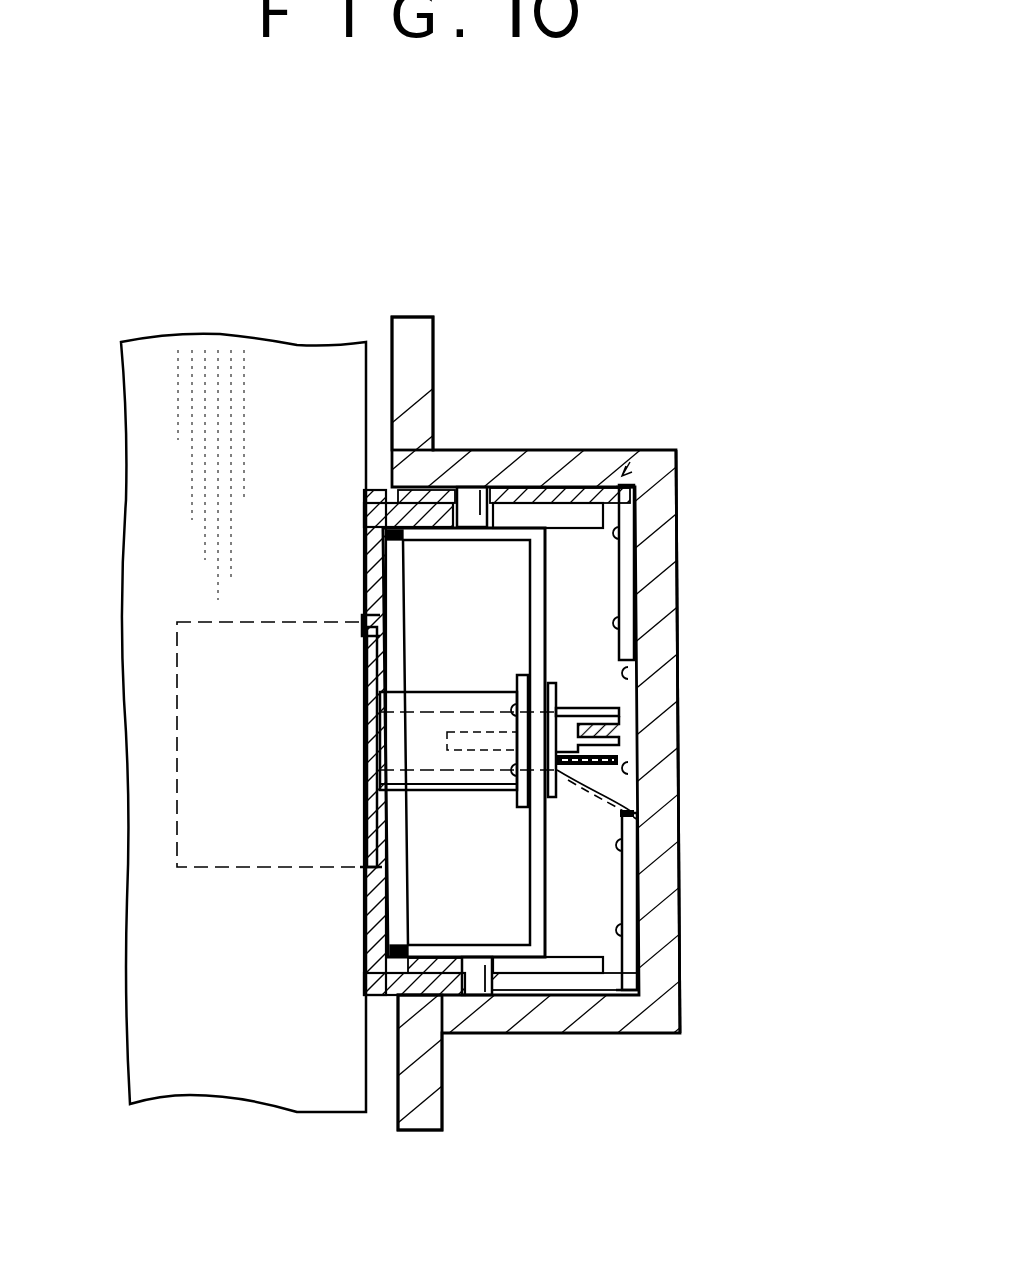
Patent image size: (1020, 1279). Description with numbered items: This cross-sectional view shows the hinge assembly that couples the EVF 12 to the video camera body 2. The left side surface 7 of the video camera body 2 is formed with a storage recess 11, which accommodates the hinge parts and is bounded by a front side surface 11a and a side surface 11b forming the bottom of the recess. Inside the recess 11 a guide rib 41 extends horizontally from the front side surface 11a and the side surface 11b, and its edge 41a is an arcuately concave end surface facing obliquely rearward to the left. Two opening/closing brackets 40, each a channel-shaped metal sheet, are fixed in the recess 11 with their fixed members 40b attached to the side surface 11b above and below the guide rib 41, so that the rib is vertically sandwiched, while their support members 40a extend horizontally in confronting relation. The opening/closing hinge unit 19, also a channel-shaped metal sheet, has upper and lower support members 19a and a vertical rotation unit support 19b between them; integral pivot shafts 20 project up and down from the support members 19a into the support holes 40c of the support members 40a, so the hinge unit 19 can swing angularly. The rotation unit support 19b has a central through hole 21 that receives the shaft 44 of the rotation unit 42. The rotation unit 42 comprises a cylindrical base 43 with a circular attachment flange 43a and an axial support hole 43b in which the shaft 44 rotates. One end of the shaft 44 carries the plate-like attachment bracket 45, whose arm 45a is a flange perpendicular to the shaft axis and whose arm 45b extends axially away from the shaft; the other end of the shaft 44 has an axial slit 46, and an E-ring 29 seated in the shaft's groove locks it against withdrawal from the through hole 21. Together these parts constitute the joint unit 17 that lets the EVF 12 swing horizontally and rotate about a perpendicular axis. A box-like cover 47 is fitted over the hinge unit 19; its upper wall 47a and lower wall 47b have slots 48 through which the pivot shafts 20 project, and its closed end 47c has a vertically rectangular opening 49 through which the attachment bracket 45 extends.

The video camera body 2 is at (433, 340).
The left side surface 7 is at (392, 362).
The storage recess 11 is at (640, 637).
The front side surface 11a is at (625, 509).
The side surface 11b is at (635, 765).
The EVF 12 is at (200, 1105).
The joint unit 17 is at (627, 468).
The opening/closing hinge unit 19 is at (545, 882).
The support members 19a is at (390, 540).
The rotation unit support 19b is at (548, 858).
The pivot shafts 20 is at (493, 512).
The through hole 21 is at (632, 814).
The E-ring 29 is at (630, 825).
The opening/closing brackets 40 is at (648, 590).
The support members 40a is at (556, 498).
The fixed members 40b is at (634, 490).
The support holes 40c is at (461, 520).
The guide rib 41 is at (618, 738).
The edge 41a is at (622, 775).
The rotation unit 42 is at (427, 692).
The base 43 is at (468, 790).
The attachment flange 43a is at (520, 675).
The support hole 43b is at (420, 760).
The shaft 44 is at (580, 705).
The attachment bracket 45 is at (178, 789).
The arm 45a is at (372, 762).
The arm 45b is at (230, 855).
The slit 46 is at (615, 700).
The cover 47 is at (378, 560).
The upper wall 47a is at (395, 510).
The lower wall 47b is at (415, 985).
The closed end 47c is at (373, 905).
The slots 48 is at (468, 524).
The opening 49 is at (368, 625).